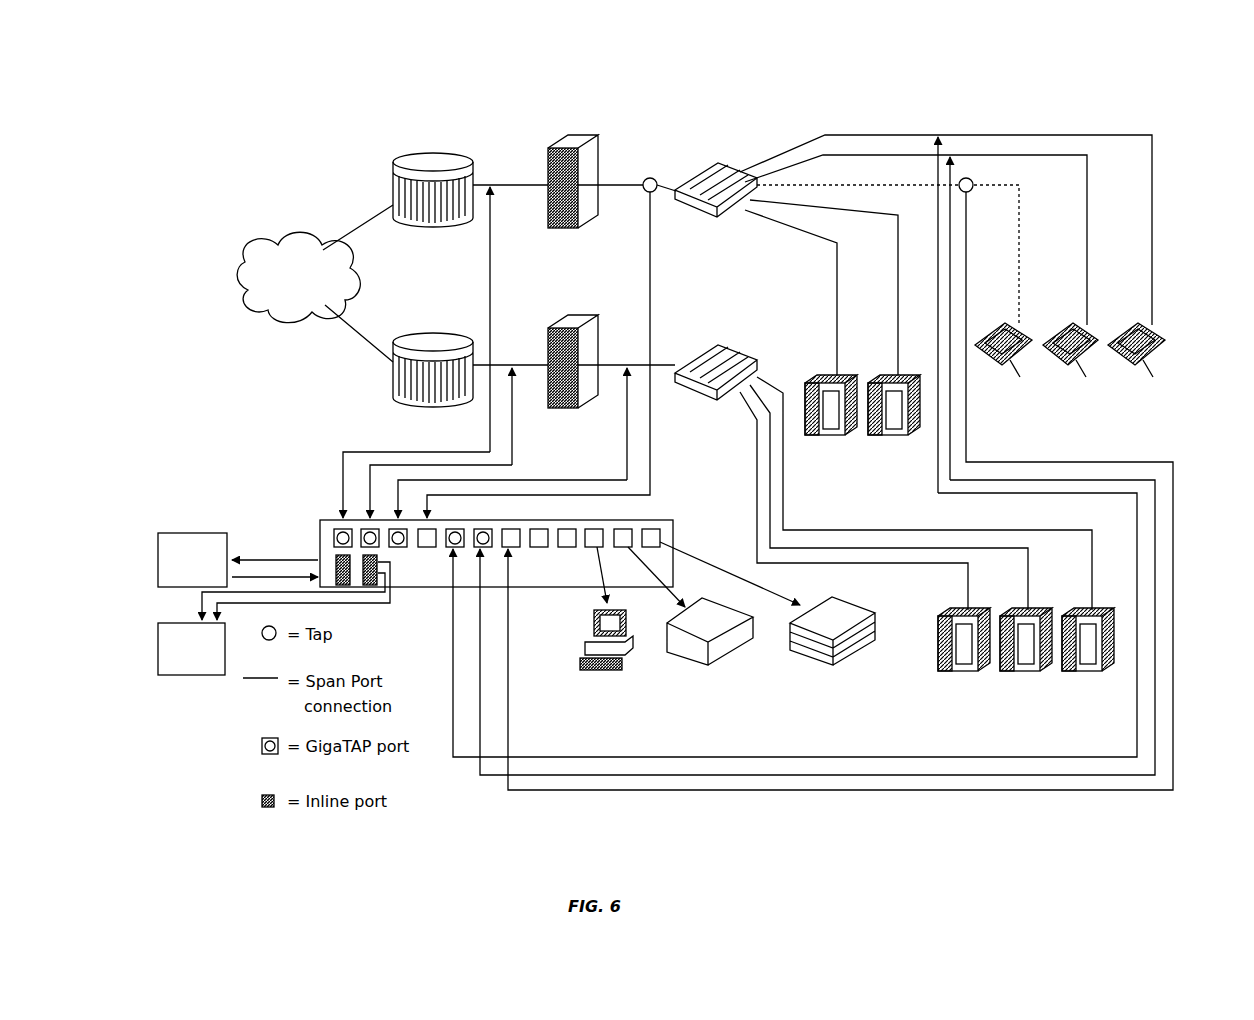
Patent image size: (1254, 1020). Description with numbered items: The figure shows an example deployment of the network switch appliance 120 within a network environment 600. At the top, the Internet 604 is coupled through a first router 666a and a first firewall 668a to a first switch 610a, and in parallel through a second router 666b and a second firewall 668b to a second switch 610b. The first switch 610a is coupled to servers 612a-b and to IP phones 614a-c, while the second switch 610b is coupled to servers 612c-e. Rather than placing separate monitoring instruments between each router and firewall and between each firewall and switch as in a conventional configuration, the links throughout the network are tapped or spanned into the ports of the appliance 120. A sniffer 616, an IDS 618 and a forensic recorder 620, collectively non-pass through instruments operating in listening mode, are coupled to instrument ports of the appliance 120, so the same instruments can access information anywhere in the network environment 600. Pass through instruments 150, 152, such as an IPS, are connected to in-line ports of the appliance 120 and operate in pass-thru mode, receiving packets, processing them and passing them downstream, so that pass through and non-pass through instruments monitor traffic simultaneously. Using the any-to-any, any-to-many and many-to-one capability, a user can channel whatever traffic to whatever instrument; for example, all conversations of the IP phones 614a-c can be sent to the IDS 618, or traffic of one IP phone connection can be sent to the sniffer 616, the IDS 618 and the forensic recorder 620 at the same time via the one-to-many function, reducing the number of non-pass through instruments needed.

The network environment 600 is at (1062, 108).
The Internet 604 is at (296, 238).
The router 666a is at (433, 150).
The router 666b is at (432, 332).
The firewall 668a is at (562, 148).
The firewall 668b is at (560, 328).
The switch 610a is at (712, 165).
The switch 610b is at (712, 350).
The servers 612a-b is at (910, 454).
The servers 612c-e is at (1102, 692).
The IP phones 614a-c is at (1070, 382).
The network switch appliance 120 is at (318, 552).
The pass through instrument 150 is at (156, 560).
The pass through instrument 152 is at (156, 648).
The sniffer 616 is at (584, 623).
The IDS 618 is at (685, 662).
The forensic recorder 620 is at (793, 662).